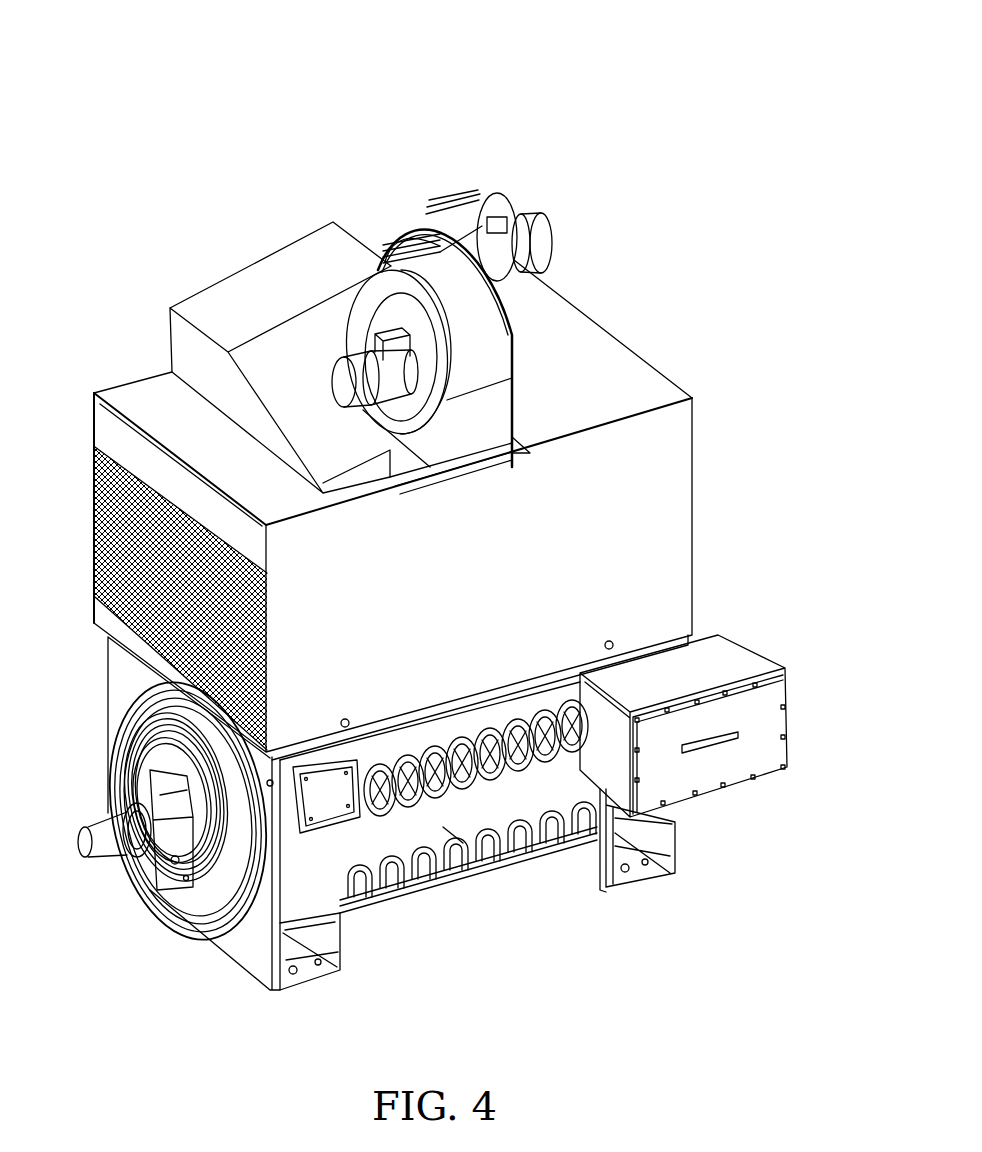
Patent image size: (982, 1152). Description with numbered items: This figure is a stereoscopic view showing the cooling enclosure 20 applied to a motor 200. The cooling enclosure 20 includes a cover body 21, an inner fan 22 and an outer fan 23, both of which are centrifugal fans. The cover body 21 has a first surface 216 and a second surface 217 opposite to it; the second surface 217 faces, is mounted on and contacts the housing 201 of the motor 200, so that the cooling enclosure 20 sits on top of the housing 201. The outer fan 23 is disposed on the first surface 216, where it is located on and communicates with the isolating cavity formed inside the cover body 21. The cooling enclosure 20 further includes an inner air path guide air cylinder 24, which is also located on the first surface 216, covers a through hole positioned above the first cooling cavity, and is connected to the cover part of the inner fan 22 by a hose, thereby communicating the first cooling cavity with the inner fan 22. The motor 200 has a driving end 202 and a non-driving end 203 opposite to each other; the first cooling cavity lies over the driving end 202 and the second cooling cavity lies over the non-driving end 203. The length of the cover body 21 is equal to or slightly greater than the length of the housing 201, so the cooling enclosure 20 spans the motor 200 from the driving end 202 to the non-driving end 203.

The motor 200 is at (307, 93).
The cooling enclosure 20 is at (380, 192).
The cover body 21 is at (657, 525).
The inner fan 22 is at (473, 213).
The outer fan 23 is at (495, 278).
The inner air path guide air cylinder 24 is at (298, 280).
The first surface 216 is at (566, 401).
The second surface 217 is at (695, 633).
The housing 201 is at (487, 887).
The driving end 202 is at (138, 930).
The non-driving end 203 is at (718, 812).